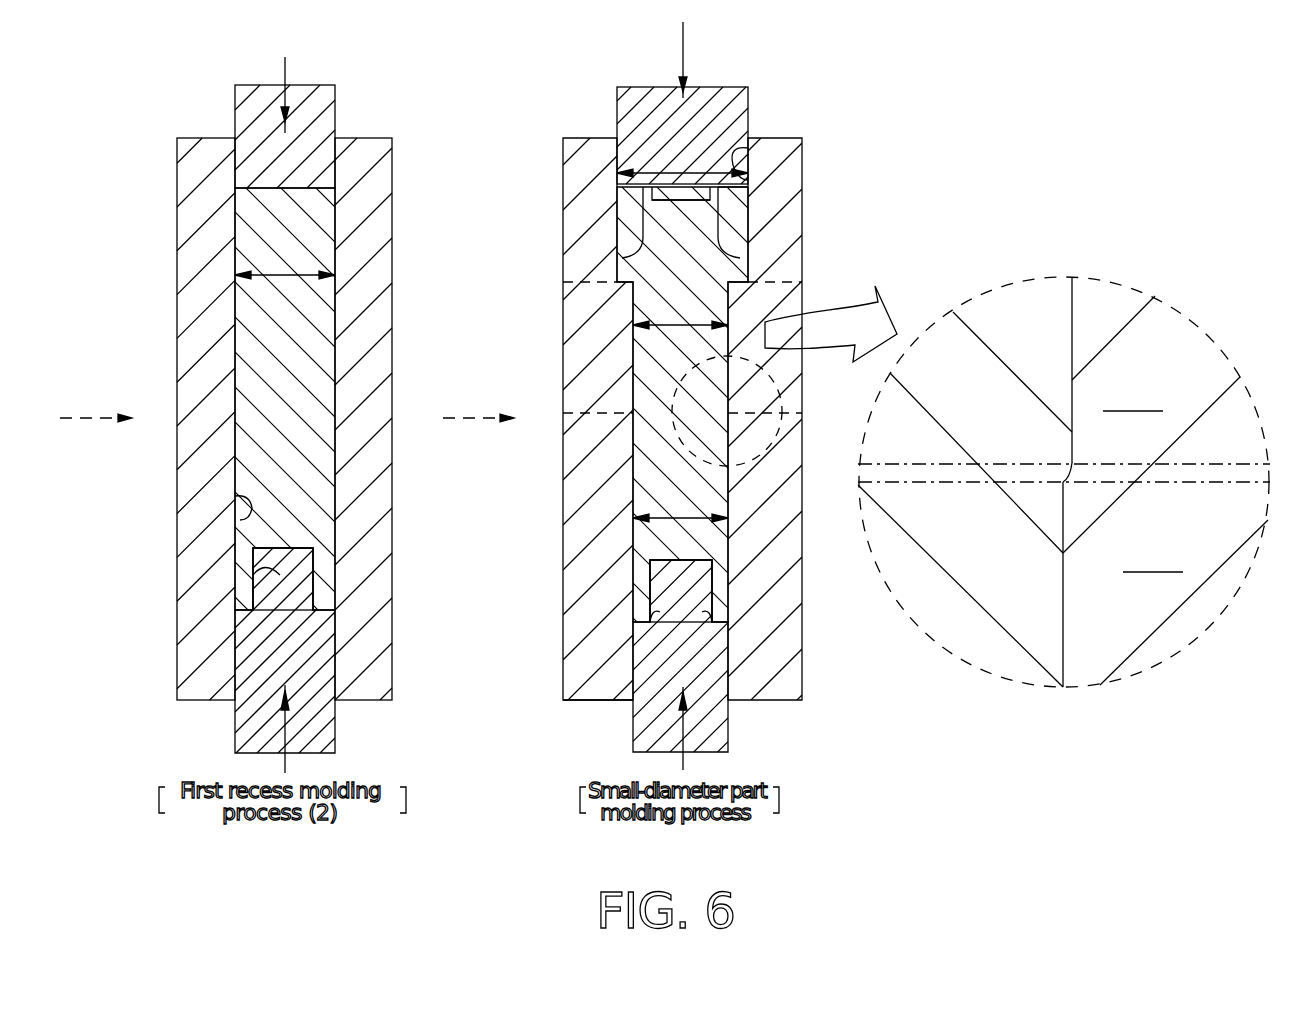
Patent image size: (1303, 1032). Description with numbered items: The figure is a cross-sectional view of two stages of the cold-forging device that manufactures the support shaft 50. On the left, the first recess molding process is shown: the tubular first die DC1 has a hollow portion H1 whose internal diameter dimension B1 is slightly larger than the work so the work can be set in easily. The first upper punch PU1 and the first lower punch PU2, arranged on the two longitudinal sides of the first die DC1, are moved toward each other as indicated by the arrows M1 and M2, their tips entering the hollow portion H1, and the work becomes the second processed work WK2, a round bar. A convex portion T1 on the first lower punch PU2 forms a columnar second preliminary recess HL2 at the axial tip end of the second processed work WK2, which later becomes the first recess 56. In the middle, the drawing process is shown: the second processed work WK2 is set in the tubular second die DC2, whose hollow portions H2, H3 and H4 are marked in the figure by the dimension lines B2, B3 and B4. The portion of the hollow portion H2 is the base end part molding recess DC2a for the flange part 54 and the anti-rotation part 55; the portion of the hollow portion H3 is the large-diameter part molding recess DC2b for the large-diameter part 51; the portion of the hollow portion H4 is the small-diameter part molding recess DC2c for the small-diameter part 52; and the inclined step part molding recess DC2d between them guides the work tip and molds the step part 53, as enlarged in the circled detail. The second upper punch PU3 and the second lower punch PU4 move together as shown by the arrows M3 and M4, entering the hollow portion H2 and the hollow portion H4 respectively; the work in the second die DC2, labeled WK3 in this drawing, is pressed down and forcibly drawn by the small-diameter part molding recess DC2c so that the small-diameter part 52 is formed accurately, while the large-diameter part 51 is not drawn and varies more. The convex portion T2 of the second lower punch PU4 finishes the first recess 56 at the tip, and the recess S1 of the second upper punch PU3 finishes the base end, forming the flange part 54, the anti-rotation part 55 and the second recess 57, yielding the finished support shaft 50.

The first upper punch PU1 is at (268, 122).
The first lower punch PU2 is at (308, 715).
The second upper punch PU3 is at (644, 120).
The second lower punch PU4 is at (710, 722).
The first die DC1 is at (208, 372).
The second die DC2 is at (674, 423).
The base end part molding recess DC2a is at (773, 190).
The large-diameter part molding recess DC2b is at (598, 328).
The small-diameter part molding recess DC2c is at (762, 641).
The step part molding recess DC2d is at (600, 412).
The arrow indicating movement of first upper punch M1 is at (285, 111).
The arrow indicating movement of first lower punch M2 is at (285, 711).
The arrow indicating movement of second upper punch M3 is at (682, 78).
The arrow indicating movement of second lower punch M4 is at (681, 712).
The second processed work WK2 is at (260, 390).
The workpiece in small-diameter part molding WK3 is at (682, 404).
The internal diameter dimension of hollow portion H1 B1 is at (285, 261).
The large-diameter part width B2 is at (682, 159).
The small-diameter part width B3 is at (680, 311).
The small-diameter part width B4 is at (680, 504).
The hollow portion H1 is at (235, 494).
The hollow portion H2 is at (733, 148).
The hollow portion H3 is at (1067, 347).
The hollow portion H4 is at (1063, 602).
The second preliminary recess HL2 is at (283, 600).
The convex portion of first lower punch T1 is at (262, 580).
The convex portion of second lower punch T2 is at (655, 590).
The recess of second upper punch S1 is at (685, 262).
The support shaft 50 is at (1070, 532).
The large-diameter part 51 is at (947, 404).
The small-diameter part 52 is at (947, 546).
The step part 53 is at (915, 458).
The flange part 54 is at (725, 262).
The anti-rotation part 55 is at (705, 218).
The first recess 56 is at (710, 590).
The second recess 57 is at (665, 200).